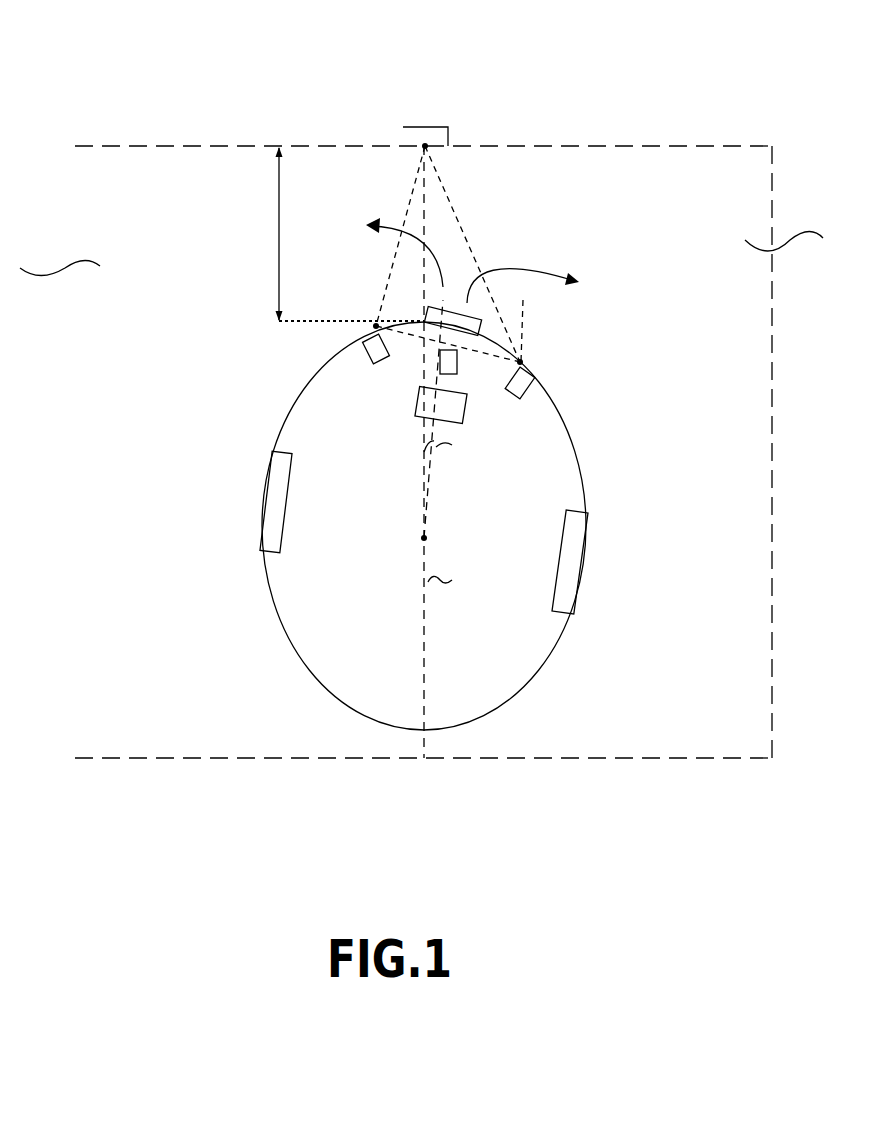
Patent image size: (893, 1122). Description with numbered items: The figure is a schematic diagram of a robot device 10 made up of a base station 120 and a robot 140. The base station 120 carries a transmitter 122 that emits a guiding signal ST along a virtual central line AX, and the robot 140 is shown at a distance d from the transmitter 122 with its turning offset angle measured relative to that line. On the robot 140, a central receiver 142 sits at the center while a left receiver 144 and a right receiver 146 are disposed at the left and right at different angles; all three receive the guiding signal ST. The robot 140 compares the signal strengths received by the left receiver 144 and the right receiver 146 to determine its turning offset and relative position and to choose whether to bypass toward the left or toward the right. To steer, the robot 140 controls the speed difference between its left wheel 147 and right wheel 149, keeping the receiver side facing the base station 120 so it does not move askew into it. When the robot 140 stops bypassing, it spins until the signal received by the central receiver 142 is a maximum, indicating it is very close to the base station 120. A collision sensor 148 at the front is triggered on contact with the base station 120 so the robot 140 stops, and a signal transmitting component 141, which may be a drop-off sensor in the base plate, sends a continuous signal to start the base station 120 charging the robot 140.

The robot device 10 is at (71, 100).
The base station 120 is at (527, 170).
The transmitter 122 is at (451, 134).
The robot 140 is at (284, 361).
The signal transmitting component 141 is at (418, 402).
The central receiver 142 is at (457, 358).
The left receiver 144 is at (373, 362).
The right receiver 146 is at (512, 396).
The left wheel 147 is at (262, 500).
The collision sensor 148 is at (472, 309).
The right wheel 149 is at (580, 567).